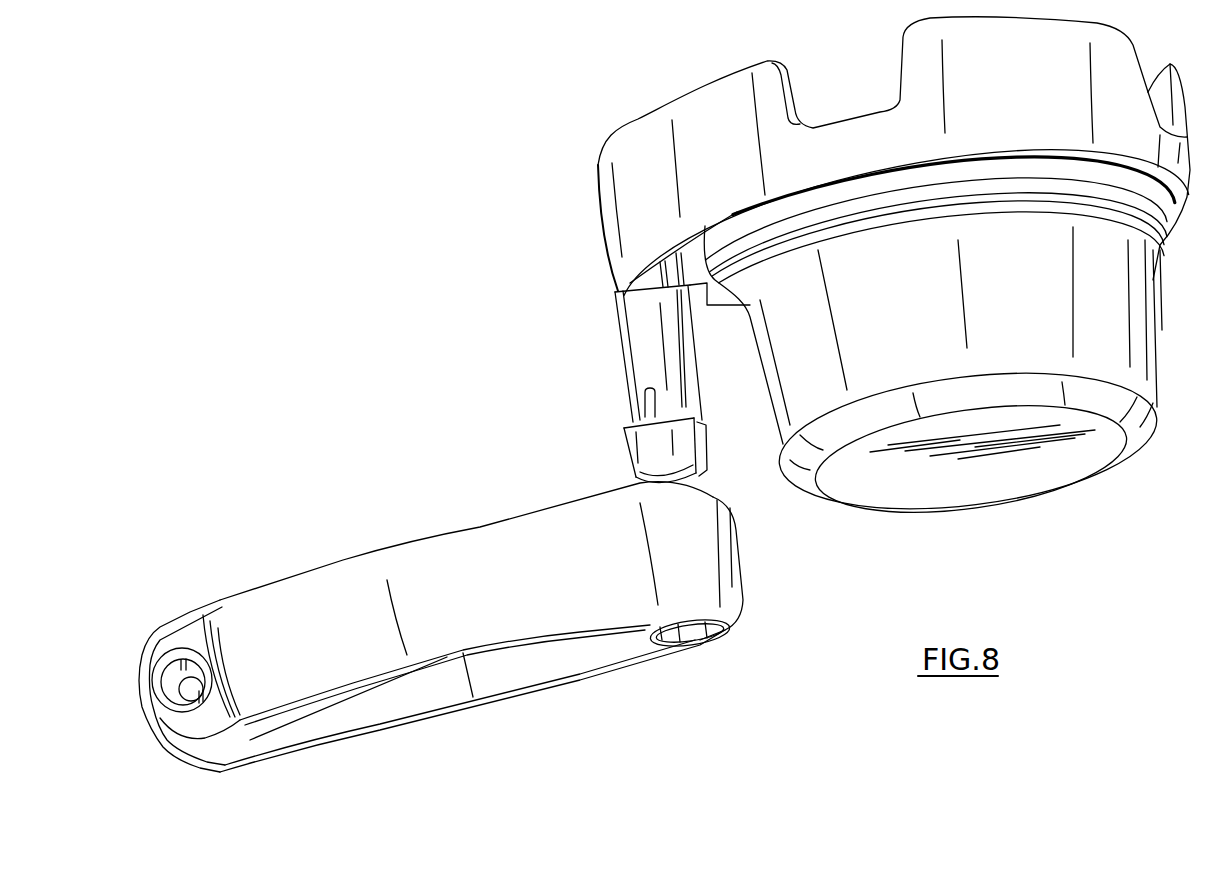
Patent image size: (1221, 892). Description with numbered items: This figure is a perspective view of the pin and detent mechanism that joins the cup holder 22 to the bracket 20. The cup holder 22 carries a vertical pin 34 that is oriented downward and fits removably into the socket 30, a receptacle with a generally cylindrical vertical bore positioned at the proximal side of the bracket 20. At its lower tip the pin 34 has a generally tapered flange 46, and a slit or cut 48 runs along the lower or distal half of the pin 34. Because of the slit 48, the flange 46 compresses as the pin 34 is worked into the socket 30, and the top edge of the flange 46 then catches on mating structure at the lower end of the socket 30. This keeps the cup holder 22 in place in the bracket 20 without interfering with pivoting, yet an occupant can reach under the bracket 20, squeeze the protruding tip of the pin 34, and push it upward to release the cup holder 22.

The cup holder 22 is at (590, 123).
The pin 34 is at (590, 318).
The slit 48 is at (705, 380).
The tapered flange 46 is at (627, 452).
The bracket 20 is at (273, 580).
The socket 30 is at (712, 660).